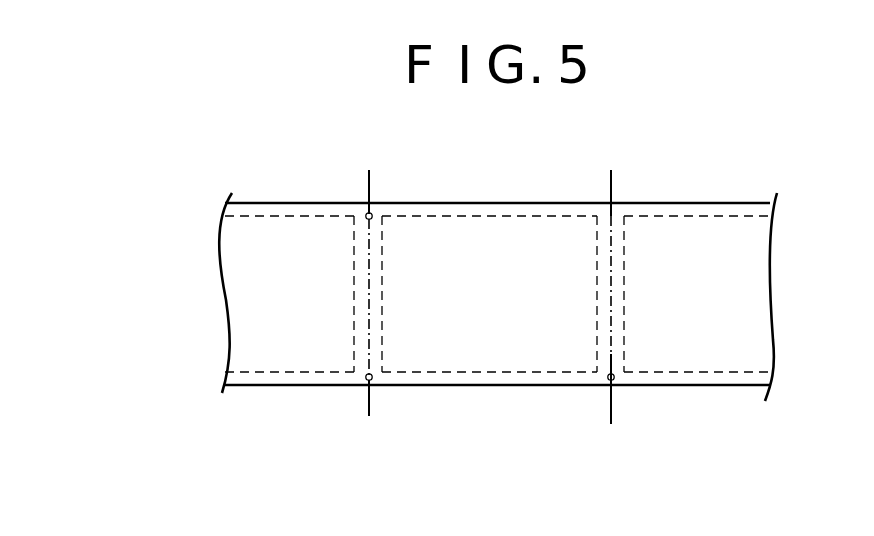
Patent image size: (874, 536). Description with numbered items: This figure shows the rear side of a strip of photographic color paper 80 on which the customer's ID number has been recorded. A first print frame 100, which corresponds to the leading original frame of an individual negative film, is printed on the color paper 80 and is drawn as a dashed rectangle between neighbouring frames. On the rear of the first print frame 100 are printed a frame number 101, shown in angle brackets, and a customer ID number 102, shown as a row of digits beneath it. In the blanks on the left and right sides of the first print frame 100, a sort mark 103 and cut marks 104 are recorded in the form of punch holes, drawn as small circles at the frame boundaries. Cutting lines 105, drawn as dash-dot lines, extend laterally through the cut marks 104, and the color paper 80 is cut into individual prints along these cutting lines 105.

The color paper 80 is at (778, 268).
The first print frame 100 is at (428, 373).
The frame number 101 is at (510, 281).
The customer ID number 102 is at (519, 333).
The sort mark 103 is at (367, 212).
The cut mark 104 is at (367, 381).
The cutting line 105 is at (371, 185).